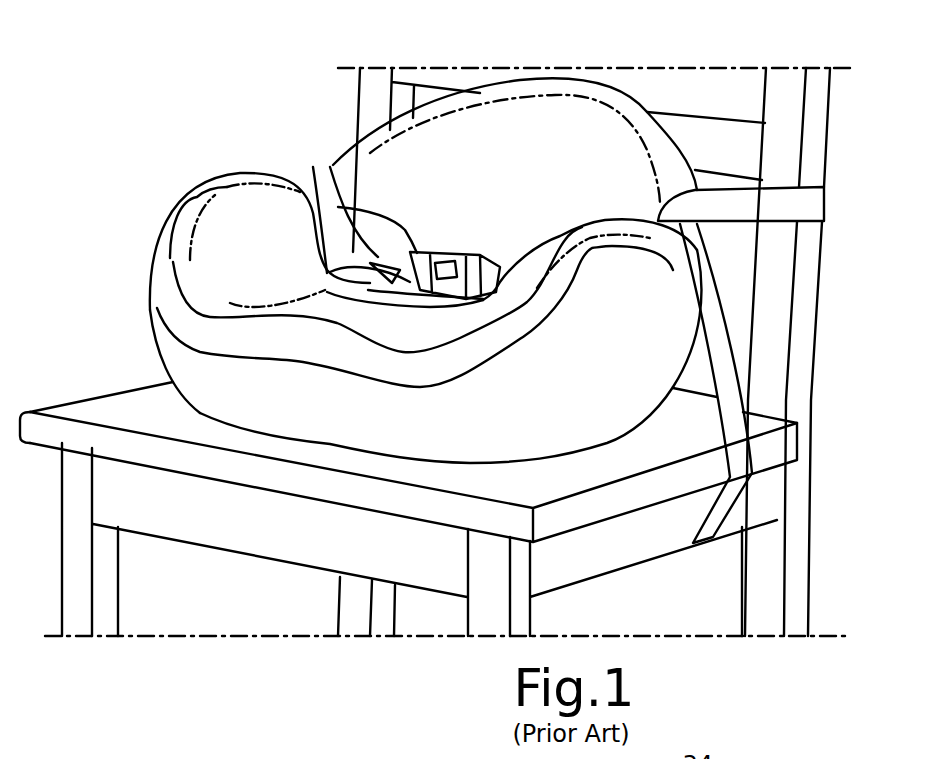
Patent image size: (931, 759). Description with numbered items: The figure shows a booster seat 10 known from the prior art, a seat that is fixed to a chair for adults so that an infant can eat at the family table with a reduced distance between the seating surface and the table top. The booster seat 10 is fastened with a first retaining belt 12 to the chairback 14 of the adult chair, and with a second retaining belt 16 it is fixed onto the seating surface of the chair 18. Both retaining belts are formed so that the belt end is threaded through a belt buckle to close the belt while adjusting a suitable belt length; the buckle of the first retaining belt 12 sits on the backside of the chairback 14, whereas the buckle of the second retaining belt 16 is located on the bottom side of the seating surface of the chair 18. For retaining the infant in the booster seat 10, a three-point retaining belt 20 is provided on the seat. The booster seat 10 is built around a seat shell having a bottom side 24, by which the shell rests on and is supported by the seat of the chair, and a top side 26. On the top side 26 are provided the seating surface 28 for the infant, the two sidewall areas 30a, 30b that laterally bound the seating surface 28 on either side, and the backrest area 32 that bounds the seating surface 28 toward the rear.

The booster seat 10 is at (213, 182).
The first retaining belt 12 is at (810, 204).
The chairback 14 is at (812, 117).
The second retaining belt 16 is at (740, 365).
The chair 18 is at (637, 450).
The three-point retaining belt 20 is at (412, 250).
The bottom side 24 is at (553, 463).
The top side 26 is at (323, 283).
The seating surface 28 is at (363, 325).
The sidewall area 30a is at (247, 197).
The sidewall area 30b is at (580, 230).
The backrest area 32 is at (550, 133).